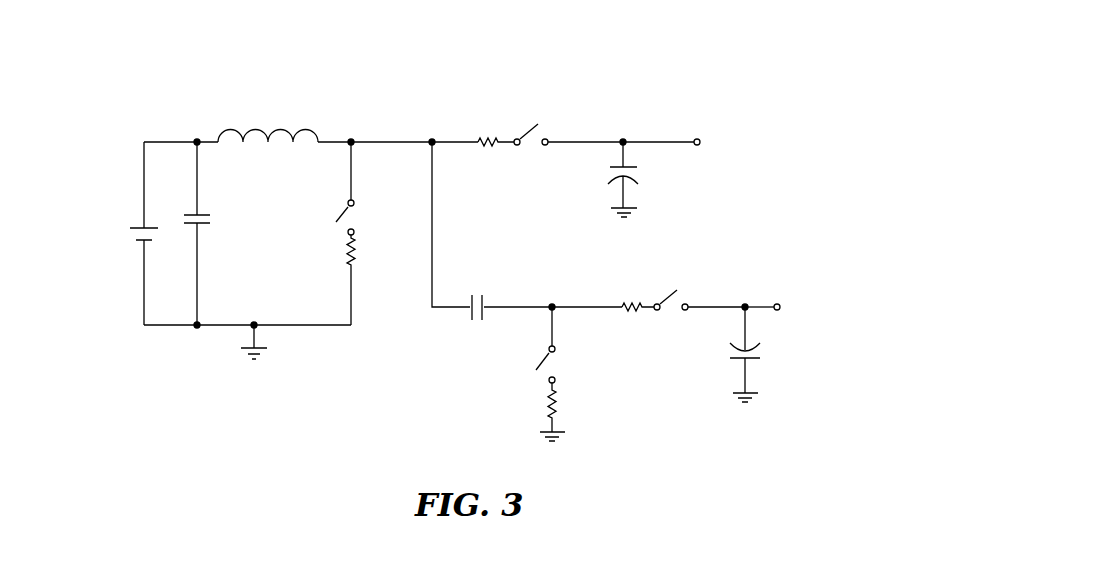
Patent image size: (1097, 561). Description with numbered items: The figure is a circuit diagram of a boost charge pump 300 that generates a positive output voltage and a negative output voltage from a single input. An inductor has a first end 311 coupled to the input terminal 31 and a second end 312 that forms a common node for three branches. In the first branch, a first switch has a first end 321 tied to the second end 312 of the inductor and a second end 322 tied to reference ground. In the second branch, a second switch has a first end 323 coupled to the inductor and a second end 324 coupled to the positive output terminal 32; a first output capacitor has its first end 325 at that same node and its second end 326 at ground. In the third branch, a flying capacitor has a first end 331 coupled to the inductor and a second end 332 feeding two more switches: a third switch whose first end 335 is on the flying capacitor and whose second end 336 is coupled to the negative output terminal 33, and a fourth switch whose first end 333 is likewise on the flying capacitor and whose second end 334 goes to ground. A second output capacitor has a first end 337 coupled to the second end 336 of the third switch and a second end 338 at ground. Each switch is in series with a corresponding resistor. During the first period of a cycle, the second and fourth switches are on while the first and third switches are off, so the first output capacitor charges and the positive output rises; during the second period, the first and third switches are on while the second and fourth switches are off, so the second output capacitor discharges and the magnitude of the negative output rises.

The boost charge pump 300 is at (760, 112).
The input terminal 31 is at (145, 142).
The first end of the inductor 311 is at (216, 142).
The second end of the inductor 312 is at (320, 142).
The first end of the first switch 321 is at (352, 178).
The second end of the first switch 322 is at (352, 283).
The first end of the second switch 323 is at (466, 142).
The second end of the second switch 324 is at (568, 142).
The first end of the first output capacitor 325 is at (620, 159).
The second end of the first output capacitor 326 is at (620, 189).
The positive output terminal 32 is at (657, 142).
The first end of the flying capacitor 331 is at (452, 308).
The second end of the flying capacitor 332 is at (498, 308).
The first end of the fourth switch 333 is at (553, 332).
The second end of the fourth switch 334 is at (553, 418).
The first end of the third switch 335 is at (601, 307).
The second end of the third switch 336 is at (704, 307).
The negative output terminal 33 is at (748, 305).
The first end of the second output capacitor 337 is at (748, 329).
The second end of the second output capacitor 338 is at (748, 381).